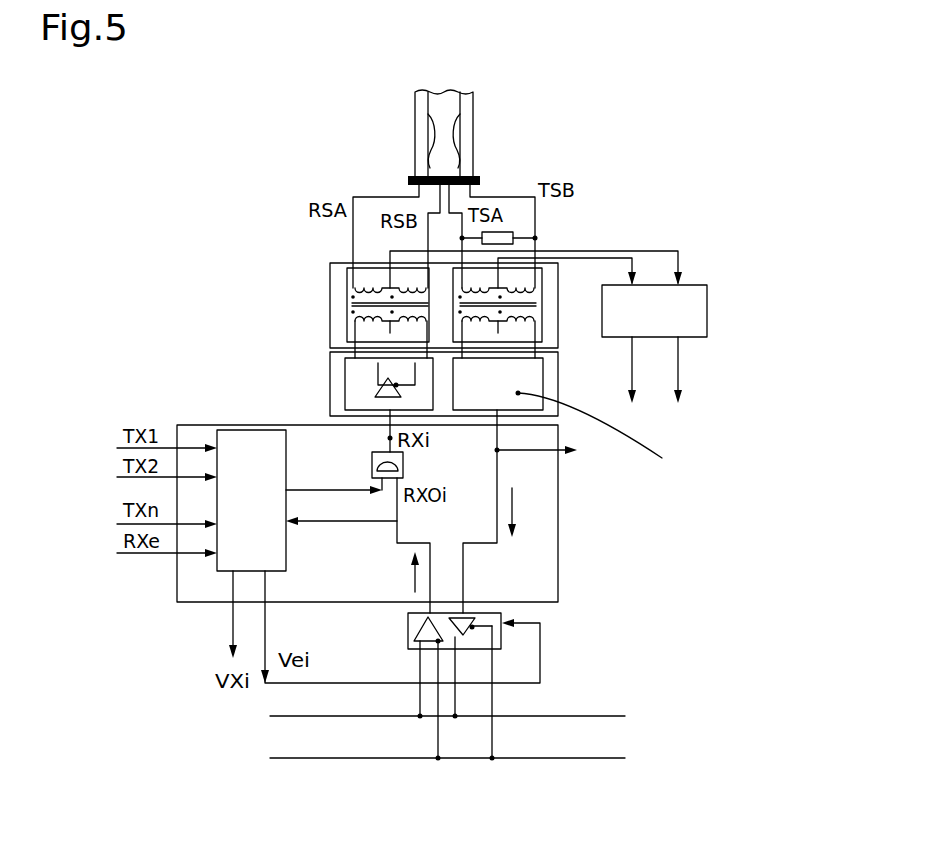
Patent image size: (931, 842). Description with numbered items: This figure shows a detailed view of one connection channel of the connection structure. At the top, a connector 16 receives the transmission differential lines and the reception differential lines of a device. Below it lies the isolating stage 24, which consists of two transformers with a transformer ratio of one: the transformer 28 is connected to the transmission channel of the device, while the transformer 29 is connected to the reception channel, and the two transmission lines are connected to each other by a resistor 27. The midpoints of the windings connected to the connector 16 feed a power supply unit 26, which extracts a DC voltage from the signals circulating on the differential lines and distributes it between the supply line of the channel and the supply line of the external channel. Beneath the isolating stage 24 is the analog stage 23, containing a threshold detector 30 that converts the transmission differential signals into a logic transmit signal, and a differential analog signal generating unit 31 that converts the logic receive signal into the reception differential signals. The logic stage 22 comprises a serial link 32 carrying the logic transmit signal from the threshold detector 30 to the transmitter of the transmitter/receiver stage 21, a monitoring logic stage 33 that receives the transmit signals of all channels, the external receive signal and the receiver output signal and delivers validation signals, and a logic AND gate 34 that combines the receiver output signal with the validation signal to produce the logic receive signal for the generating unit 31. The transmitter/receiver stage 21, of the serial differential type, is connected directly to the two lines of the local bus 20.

The connector 16 is at (478, 178).
The local bus 20 is at (357, 716).
The transmitter/receiver stage 21 is at (408, 633).
The logic stage 22 is at (558, 553).
The analog stage 23 is at (330, 368).
The isolating stage 24 is at (330, 304).
The power supply unit 26 is at (707, 318).
The resistor 27 is at (508, 233).
The transformer 28 is at (543, 327).
The transformer 29 is at (347, 273).
The threshold detector 30 is at (543, 392).
The differential analog signal generating unit 31 is at (347, 400).
The serial link 32 is at (497, 475).
The monitoring logic stage 33 is at (287, 560).
The logic AND gate 34 is at (404, 467).